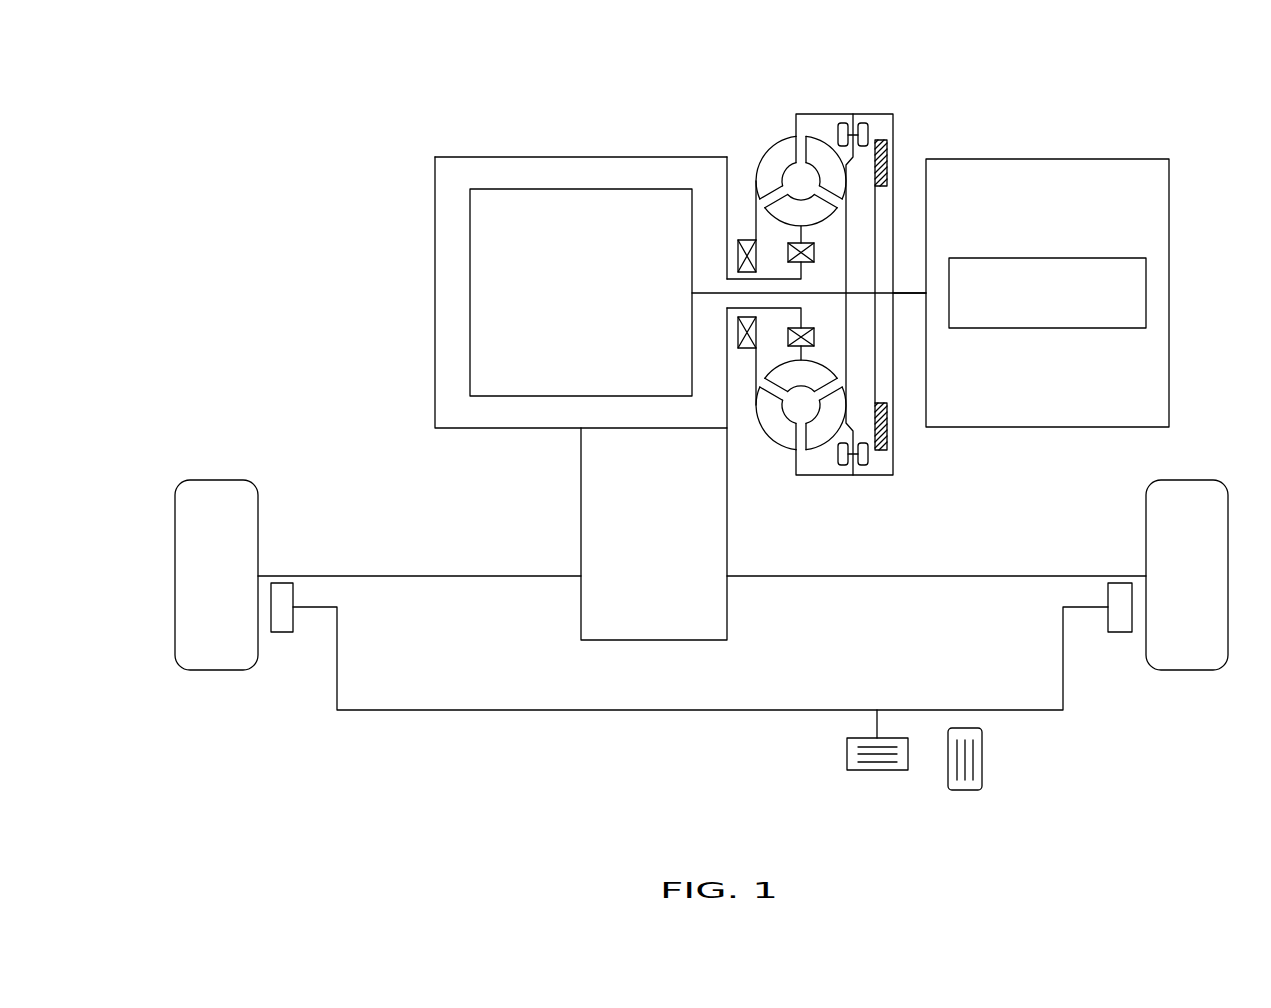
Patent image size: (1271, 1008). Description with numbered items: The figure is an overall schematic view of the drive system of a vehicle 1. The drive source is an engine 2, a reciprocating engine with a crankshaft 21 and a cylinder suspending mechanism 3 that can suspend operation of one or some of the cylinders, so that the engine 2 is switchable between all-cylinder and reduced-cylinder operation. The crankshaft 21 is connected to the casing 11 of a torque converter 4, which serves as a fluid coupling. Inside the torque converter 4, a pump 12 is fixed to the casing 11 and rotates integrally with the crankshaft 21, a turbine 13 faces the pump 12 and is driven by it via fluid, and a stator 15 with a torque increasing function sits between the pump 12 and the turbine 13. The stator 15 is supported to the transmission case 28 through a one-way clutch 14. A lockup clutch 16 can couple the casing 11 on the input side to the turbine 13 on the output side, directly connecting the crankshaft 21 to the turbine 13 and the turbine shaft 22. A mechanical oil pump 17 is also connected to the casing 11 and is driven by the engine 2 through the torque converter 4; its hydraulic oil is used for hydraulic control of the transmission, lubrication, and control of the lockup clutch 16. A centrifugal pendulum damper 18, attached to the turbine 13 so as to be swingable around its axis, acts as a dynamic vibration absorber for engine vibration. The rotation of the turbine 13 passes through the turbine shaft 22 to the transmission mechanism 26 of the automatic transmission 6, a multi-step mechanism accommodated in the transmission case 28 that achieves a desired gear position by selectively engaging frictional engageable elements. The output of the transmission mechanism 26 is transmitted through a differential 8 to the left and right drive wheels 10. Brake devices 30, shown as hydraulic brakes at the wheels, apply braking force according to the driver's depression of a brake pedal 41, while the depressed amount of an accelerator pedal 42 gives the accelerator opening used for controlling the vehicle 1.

The vehicle 1 is at (1221, 93).
The engine 2 is at (1075, 159).
The cylinder suspending mechanism 3 is at (1146, 291).
The torque converter 4 is at (894, 98).
The automatic transmission 6 is at (544, 150).
The differential 8 is at (648, 640).
The drive wheels 10 is at (217, 670).
The casing 11 is at (803, 113).
The pump 12 is at (841, 166).
The turbine 13 is at (817, 137).
The one-way clutch 14 is at (813, 263).
The stator 15 is at (815, 229).
The lockup clutch 16 is at (887, 152).
The mechanical oil pump 17 is at (742, 240).
The centrifugal pendulum damper 18 is at (865, 113).
The crankshaft 21 is at (906, 296).
The turbine shaft 22 is at (730, 303).
The transmission mechanism 26 is at (487, 189).
The transmission case 28 is at (634, 157).
The brake device 30 is at (281, 632).
The brake pedal 41 is at (847, 753).
The accelerator pedal 42 is at (982, 755).